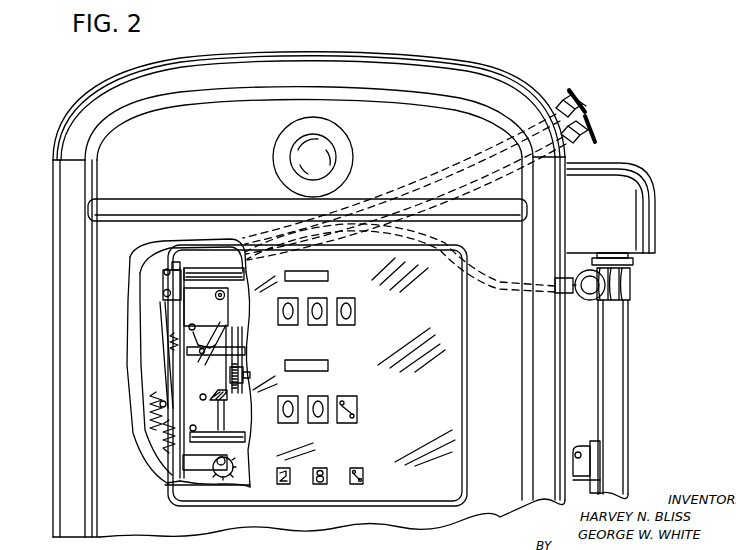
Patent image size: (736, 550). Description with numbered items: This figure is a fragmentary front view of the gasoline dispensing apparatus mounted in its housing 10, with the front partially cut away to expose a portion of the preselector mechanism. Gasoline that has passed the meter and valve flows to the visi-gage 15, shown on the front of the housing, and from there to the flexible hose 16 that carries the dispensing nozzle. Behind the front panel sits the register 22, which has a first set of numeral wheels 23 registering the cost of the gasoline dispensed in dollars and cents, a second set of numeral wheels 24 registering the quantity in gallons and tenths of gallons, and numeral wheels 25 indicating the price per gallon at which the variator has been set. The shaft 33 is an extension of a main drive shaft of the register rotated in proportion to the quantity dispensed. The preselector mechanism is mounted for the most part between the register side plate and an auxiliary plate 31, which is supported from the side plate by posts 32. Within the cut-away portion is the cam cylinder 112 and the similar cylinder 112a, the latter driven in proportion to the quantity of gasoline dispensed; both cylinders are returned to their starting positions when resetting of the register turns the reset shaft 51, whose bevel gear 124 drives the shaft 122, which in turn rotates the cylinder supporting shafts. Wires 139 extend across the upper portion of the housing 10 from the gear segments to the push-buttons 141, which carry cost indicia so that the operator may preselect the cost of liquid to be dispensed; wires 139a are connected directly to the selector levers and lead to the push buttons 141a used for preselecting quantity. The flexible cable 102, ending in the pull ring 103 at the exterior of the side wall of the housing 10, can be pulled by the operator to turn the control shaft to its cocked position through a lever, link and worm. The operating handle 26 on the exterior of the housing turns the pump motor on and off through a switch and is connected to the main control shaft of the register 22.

The housing 10 is at (80, 106).
The visi-gage 15 is at (326, 146).
The push-buttons 141 is at (577, 93).
The push buttons 141a is at (591, 130).
The flexible cable 102 is at (488, 268).
The pull ring 103 is at (600, 286).
The flexible hose 16 is at (626, 326).
The operating handle 26 is at (597, 474).
The wires 139 is at (167, 272).
The wires 139a is at (168, 415).
The cylinder 112 is at (243, 283).
The shaft 33 is at (246, 305).
The shaft 122 is at (240, 333).
The bevel gear 124 is at (240, 346).
The reset shaft 51 is at (248, 370).
The posts 32 is at (253, 441).
The cylinder 112a is at (242, 476).
The auxiliary plate 31 is at (170, 488).
The register 22 is at (368, 322).
The numeral wheels 23 is at (317, 325).
The numeral wheels 24 is at (298, 400).
The numeral wheels 25 is at (330, 468).